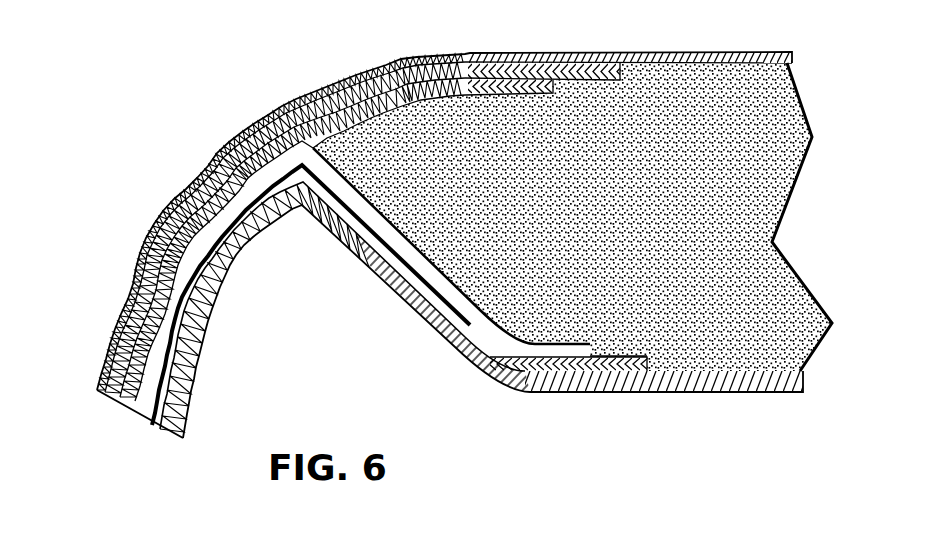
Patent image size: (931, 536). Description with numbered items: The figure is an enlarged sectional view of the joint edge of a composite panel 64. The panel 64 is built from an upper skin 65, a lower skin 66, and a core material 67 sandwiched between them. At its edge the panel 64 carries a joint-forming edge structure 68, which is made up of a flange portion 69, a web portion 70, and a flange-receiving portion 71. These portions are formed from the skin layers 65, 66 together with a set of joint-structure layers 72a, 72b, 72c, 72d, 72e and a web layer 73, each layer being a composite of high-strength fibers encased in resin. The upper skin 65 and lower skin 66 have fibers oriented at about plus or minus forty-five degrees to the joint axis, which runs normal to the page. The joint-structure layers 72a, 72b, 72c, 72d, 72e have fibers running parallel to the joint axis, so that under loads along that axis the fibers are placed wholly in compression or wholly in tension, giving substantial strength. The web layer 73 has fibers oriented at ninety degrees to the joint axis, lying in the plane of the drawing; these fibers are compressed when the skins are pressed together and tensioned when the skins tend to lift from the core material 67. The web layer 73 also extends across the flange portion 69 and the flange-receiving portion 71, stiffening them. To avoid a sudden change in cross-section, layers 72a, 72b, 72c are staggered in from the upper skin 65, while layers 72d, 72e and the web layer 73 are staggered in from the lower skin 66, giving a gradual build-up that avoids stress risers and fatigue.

The panel 64 is at (683, 421).
The upper skin 65 is at (710, 53).
The lower skin 66 is at (767, 392).
The core material 67 is at (745, 240).
The joint-forming edge structure 68 is at (186, 108).
The flange portion 69 is at (107, 255).
The web portion 70 is at (388, 327).
The flange-receiving portion 71 is at (530, 410).
The joint-structure layer 72a is at (611, 74).
The joint-structure layer 72b is at (576, 80).
The joint-structure layer 72c is at (498, 93).
The joint-structure layer 72d is at (627, 354).
The joint-structure layer 72e is at (642, 362).
The web layer 73 is at (563, 344).